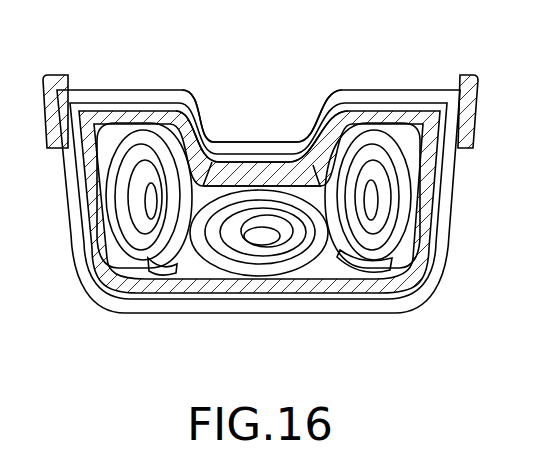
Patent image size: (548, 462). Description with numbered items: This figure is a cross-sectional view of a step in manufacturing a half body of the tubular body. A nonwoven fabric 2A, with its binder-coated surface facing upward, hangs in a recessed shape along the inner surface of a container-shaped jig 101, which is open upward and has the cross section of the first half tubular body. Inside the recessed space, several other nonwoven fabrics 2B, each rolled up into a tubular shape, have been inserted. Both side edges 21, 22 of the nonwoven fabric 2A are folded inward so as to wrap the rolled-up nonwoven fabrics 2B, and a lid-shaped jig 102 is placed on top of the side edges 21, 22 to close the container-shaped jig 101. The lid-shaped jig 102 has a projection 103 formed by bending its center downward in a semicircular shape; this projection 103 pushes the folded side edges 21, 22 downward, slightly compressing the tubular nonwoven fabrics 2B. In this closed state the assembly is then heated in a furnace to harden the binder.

The container-shaped jig 101 is at (353, 305).
The lid-shaped jig 102 is at (387, 88).
The projection 103 is at (285, 141).
The side edge 21 is at (261, 172).
The side edge 22 is at (234, 183).
The nonwoven fabric 2A is at (427, 197).
The nonwoven fabrics 2B is at (373, 228).